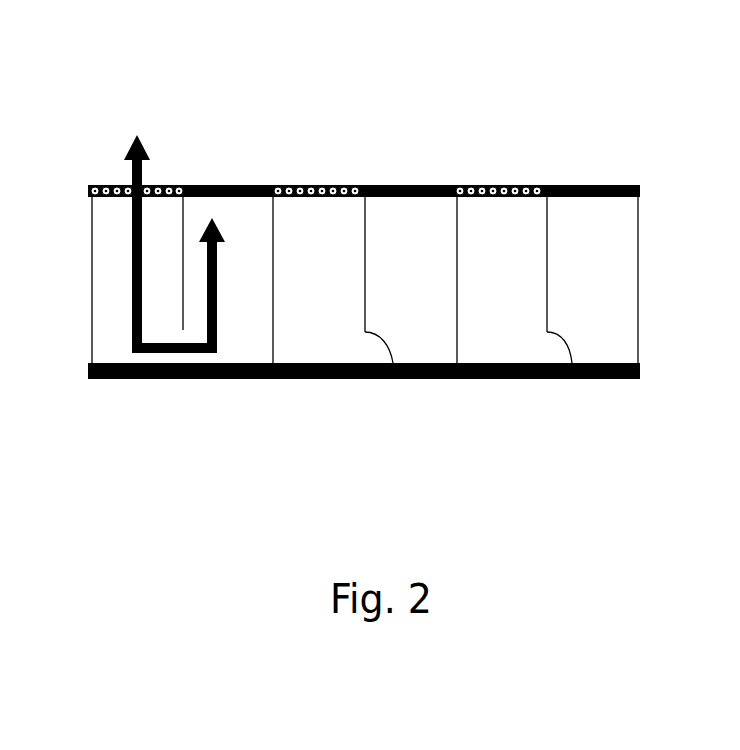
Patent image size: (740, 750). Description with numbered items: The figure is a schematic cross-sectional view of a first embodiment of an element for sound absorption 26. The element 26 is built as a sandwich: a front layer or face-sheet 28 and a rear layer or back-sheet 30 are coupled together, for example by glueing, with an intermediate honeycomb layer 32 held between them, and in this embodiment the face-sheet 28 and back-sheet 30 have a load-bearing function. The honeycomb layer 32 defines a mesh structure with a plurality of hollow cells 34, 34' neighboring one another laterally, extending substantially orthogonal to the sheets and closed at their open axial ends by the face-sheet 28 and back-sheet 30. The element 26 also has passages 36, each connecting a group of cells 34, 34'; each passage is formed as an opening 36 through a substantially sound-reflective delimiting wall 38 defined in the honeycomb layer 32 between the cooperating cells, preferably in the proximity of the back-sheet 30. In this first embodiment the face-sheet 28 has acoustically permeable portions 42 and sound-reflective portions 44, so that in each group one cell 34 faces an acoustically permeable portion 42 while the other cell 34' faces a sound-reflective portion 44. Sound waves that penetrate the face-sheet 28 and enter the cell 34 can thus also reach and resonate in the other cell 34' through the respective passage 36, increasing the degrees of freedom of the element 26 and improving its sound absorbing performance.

The element for sound absorption 26 is at (413, 110).
The front layer (face-sheet) 28 is at (594, 175).
The rear layer (back-sheet) 30 is at (186, 386).
The intermediate honeycomb layer 32 is at (646, 300).
The hollow cell 34 is at (267, 280).
The other cell 34' is at (397, 244).
The passage (opening) 36 is at (183, 330).
The delimiting wall 38 is at (356, 308).
The acoustically permeable portion 42 is at (108, 185).
The sound-reflective portion 44 is at (208, 185).